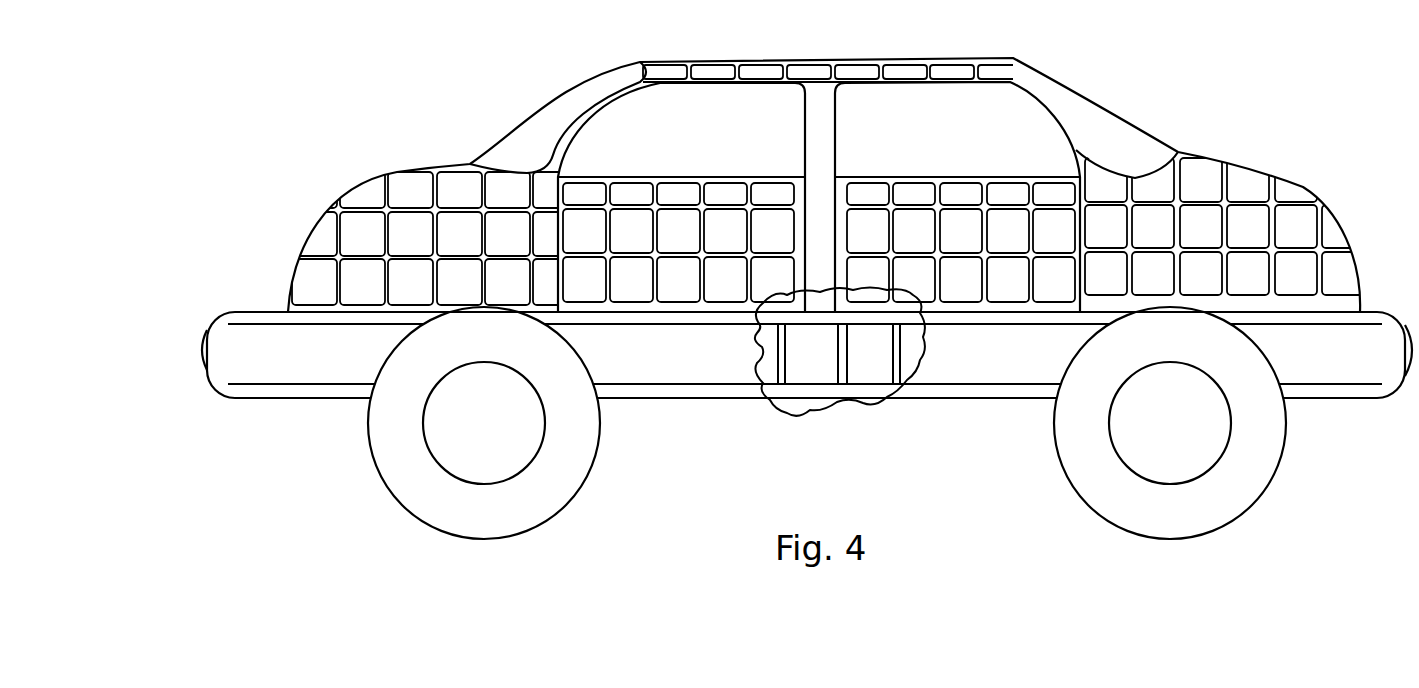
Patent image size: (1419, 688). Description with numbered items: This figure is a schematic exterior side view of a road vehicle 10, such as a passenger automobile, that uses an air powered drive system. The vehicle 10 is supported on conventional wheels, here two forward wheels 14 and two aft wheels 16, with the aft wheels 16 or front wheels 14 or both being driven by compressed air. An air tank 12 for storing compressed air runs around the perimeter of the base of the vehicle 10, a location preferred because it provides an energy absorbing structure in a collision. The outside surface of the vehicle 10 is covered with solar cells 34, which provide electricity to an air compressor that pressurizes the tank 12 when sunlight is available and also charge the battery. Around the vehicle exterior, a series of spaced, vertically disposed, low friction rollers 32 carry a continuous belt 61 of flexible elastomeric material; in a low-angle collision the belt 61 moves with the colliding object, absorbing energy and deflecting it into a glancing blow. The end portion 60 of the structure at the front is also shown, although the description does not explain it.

The road vehicle 10 is at (1133, 86).
The air tank 12 is at (258, 308).
The forward wheels 14 is at (413, 513).
The aft wheels 16 is at (1090, 505).
The rollers 32 is at (838, 372).
The solar cells 34 is at (373, 180).
The end cap 60 is at (200, 353).
The continuous belt 61 is at (951, 376).